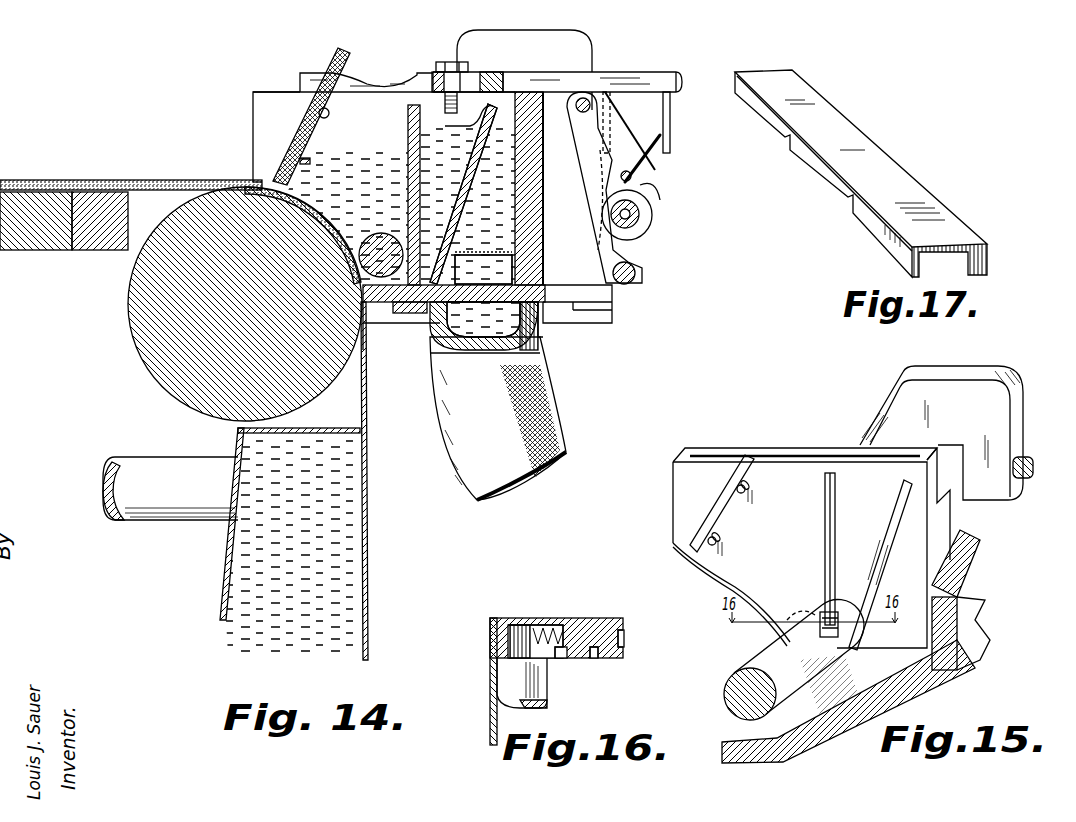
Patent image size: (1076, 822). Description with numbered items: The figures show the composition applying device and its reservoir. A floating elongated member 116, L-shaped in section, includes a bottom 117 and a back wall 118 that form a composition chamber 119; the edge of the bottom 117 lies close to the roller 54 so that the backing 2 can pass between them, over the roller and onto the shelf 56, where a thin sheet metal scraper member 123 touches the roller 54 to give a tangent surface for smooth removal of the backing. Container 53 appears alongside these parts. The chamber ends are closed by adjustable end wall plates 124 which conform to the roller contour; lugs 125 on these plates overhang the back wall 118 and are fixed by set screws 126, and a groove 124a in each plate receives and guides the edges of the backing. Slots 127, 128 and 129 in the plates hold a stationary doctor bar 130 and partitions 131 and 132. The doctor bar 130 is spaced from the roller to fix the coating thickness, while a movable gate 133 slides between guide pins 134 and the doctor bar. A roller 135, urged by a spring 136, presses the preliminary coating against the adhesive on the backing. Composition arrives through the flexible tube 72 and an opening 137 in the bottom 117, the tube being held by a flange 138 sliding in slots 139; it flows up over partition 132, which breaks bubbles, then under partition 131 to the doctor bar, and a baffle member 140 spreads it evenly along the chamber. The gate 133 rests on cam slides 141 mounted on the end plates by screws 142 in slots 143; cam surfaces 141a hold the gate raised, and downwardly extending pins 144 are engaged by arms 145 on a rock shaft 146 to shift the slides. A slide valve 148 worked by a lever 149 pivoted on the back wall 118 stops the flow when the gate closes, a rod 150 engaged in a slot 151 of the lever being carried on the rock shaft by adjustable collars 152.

In FIG. 14, the backing 2 is at (366, 400).
In FIG. 14, the container 53 is at (228, 557).
In FIG. 14, the roller 54 is at (160, 363).
In FIG. 14, the shelf 56 is at (35, 248).
In FIG. 14, the flexible tube 72 is at (553, 421).
In FIG. 14, the floating elongated member 116 is at (546, 190).
In FIG. 15, the floating elongated member 116 is at (976, 628).
In FIG. 14, the bottom 117 is at (415, 290).
In FIG. 15, the bottom 117 is at (826, 728).
In FIG. 14, the back wall 118 is at (543, 223).
In FIG. 15, the back wall 118 is at (980, 558).
In FIG. 14, the composition chamber 119 is at (373, 120).
In FIG. 14, the spring guide or scraper member 123 is at (160, 193).
In FIG. 14, the adjustable end wall plates 124 is at (265, 92).
In FIG. 15, the adjustable end wall plates 124 is at (826, 447).
In FIG. 16, the adjustable end wall plates 124 is at (605, 620).
In FIG. 15, the groove 124a is at (727, 579).
In FIG. 16, the groove 124a is at (492, 643).
In FIG. 15, the lugs 125 is at (993, 445).
In FIG. 15, the set screws 126 is at (1032, 463).
In FIG. 15, the slot 127 is at (747, 457).
In FIG. 15, the slot 128 is at (825, 511).
In FIG. 15, the slot 129 is at (900, 506).
In FIG. 14, the stationary doctor bar 130 is at (292, 128).
In FIG. 14, the partition 131 is at (408, 135).
In FIG. 14, the partition 132 is at (462, 124).
In FIG. 14, the movable gate 133 is at (340, 57).
In FIG. 14, the guide pins 134 is at (295, 160).
In FIG. 15, the guide pins 134 is at (716, 539).
In FIG. 14, the roller 135 is at (373, 237).
In FIG. 15, the roller 135 is at (747, 658).
In FIG. 16, the roller 135 is at (503, 691).
In FIG. 15, the spring 136 is at (823, 610).
In FIG. 16, the spring 136 is at (553, 625).
In FIG. 14, the opening 137 is at (547, 323).
In FIG. 14, the flange 138 is at (612, 318).
In FIG. 14, the slots 139 is at (612, 305).
In FIG. 14, the baffle member 140 is at (498, 254).
In FIG. 17, the baffle member 140 is at (872, 155).
In FIG. 14, the cam slides 141 is at (645, 58).
In FIG. 14, the cam surfaces 141a is at (354, 77).
In FIG. 14, the screws 142 is at (457, 64).
In FIG. 14, the slots 143 is at (477, 81).
In FIG. 14, the pins 144 is at (610, 103).
In FIG. 14, the arms 145 is at (670, 141).
In FIG. 14, the rock shaft 146 is at (649, 214).
In FIG. 14, the slide valve 148 is at (577, 271).
In FIG. 14, the lever 149 is at (643, 256).
In FIG. 14, the rod 150 is at (643, 174).
In FIG. 14, the slot 151 is at (650, 186).
In FIG. 14, the adjustable collars 152 is at (643, 207).